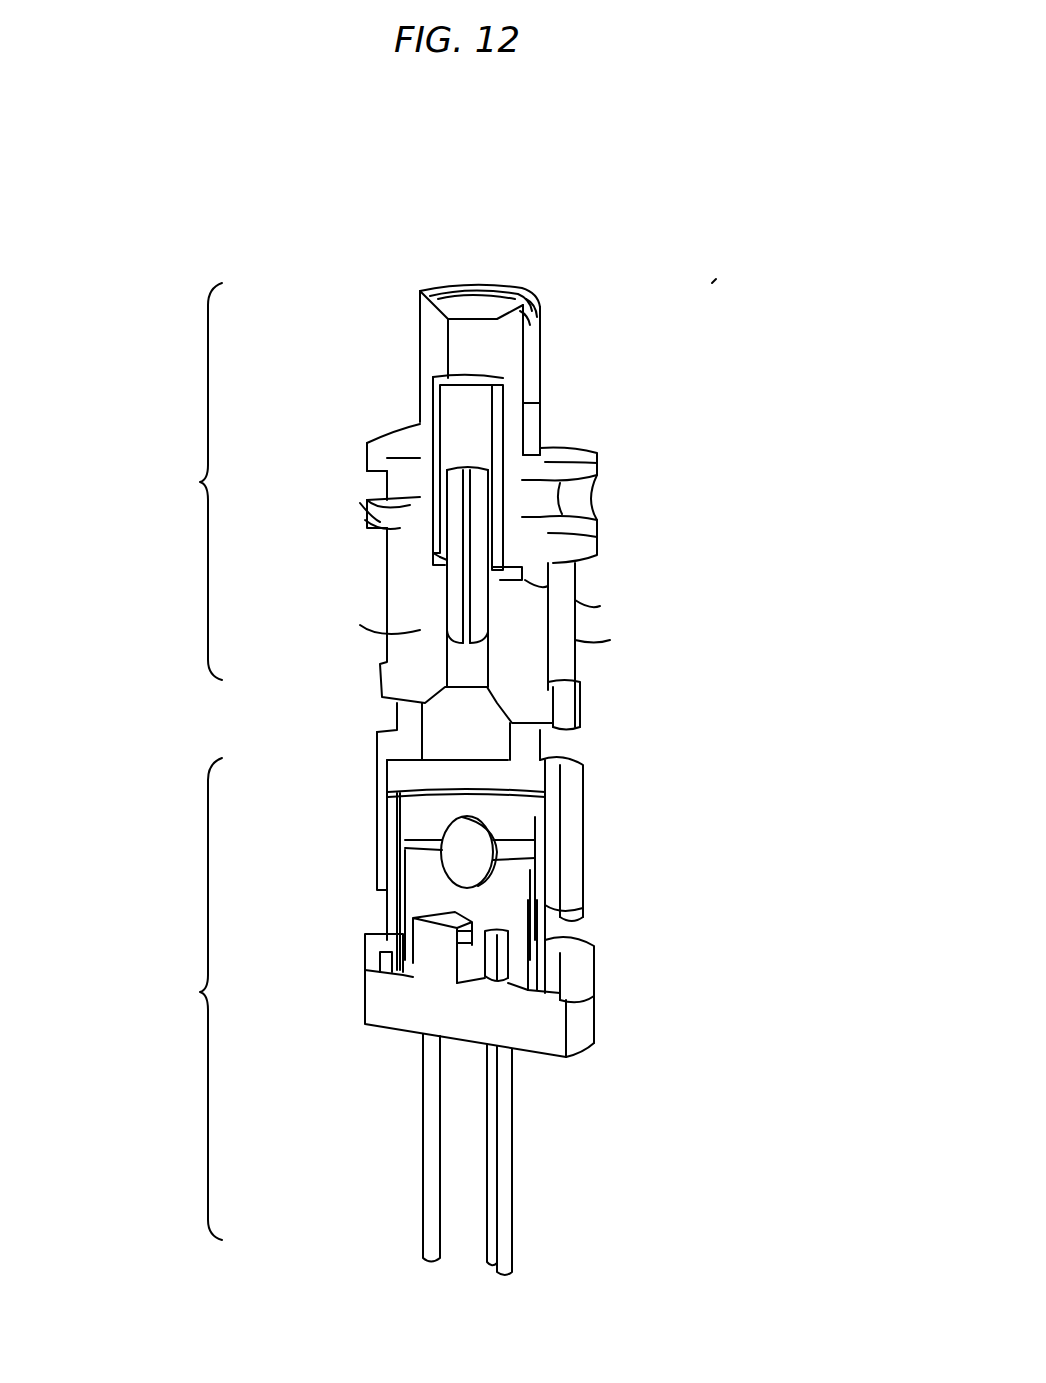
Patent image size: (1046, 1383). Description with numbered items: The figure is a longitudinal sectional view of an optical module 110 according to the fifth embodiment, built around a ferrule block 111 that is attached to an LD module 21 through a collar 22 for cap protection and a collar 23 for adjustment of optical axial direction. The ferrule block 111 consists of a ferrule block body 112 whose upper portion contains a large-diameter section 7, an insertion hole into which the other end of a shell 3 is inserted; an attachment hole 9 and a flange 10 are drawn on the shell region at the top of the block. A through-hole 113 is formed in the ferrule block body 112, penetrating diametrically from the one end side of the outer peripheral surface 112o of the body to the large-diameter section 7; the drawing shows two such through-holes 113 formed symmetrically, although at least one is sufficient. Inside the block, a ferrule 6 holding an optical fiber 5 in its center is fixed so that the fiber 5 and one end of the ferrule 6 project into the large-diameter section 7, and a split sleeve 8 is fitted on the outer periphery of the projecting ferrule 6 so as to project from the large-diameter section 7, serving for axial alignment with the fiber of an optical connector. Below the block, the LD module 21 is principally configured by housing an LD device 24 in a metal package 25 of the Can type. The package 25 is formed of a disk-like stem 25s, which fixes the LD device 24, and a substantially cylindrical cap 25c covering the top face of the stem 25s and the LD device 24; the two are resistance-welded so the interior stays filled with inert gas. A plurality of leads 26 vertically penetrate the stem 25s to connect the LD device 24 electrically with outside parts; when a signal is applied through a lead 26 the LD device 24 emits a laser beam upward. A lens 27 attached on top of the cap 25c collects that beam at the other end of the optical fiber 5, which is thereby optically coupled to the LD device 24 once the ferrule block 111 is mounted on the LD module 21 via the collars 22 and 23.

The optical module 110 is at (712, 281).
The attachment hole 9 is at (486, 298).
The shell 3 is at (542, 332).
The sleeve 8 is at (505, 400).
The flange 10 is at (565, 444).
The through-hole 113 is at (580, 506).
The outer peripheral surface 112o is at (580, 571).
The ferrule block body 112 is at (584, 630).
The ferrule block 111 is at (157, 481).
The large-diameter section 7 is at (422, 525).
The ferrule 6 is at (455, 581).
The optical fiber 5 is at (460, 638).
The collar for adjustment of optical axial direction 23 is at (588, 771).
The lens 27 is at (455, 836).
The cap 25c is at (578, 920).
The collar for cap protection 22 is at (598, 978).
The stem 25s is at (572, 1038).
The package 25 is at (574, 1054).
The lead 26 is at (512, 1188).
The LD device 24 is at (455, 933).
The LD module 21 is at (141, 999).